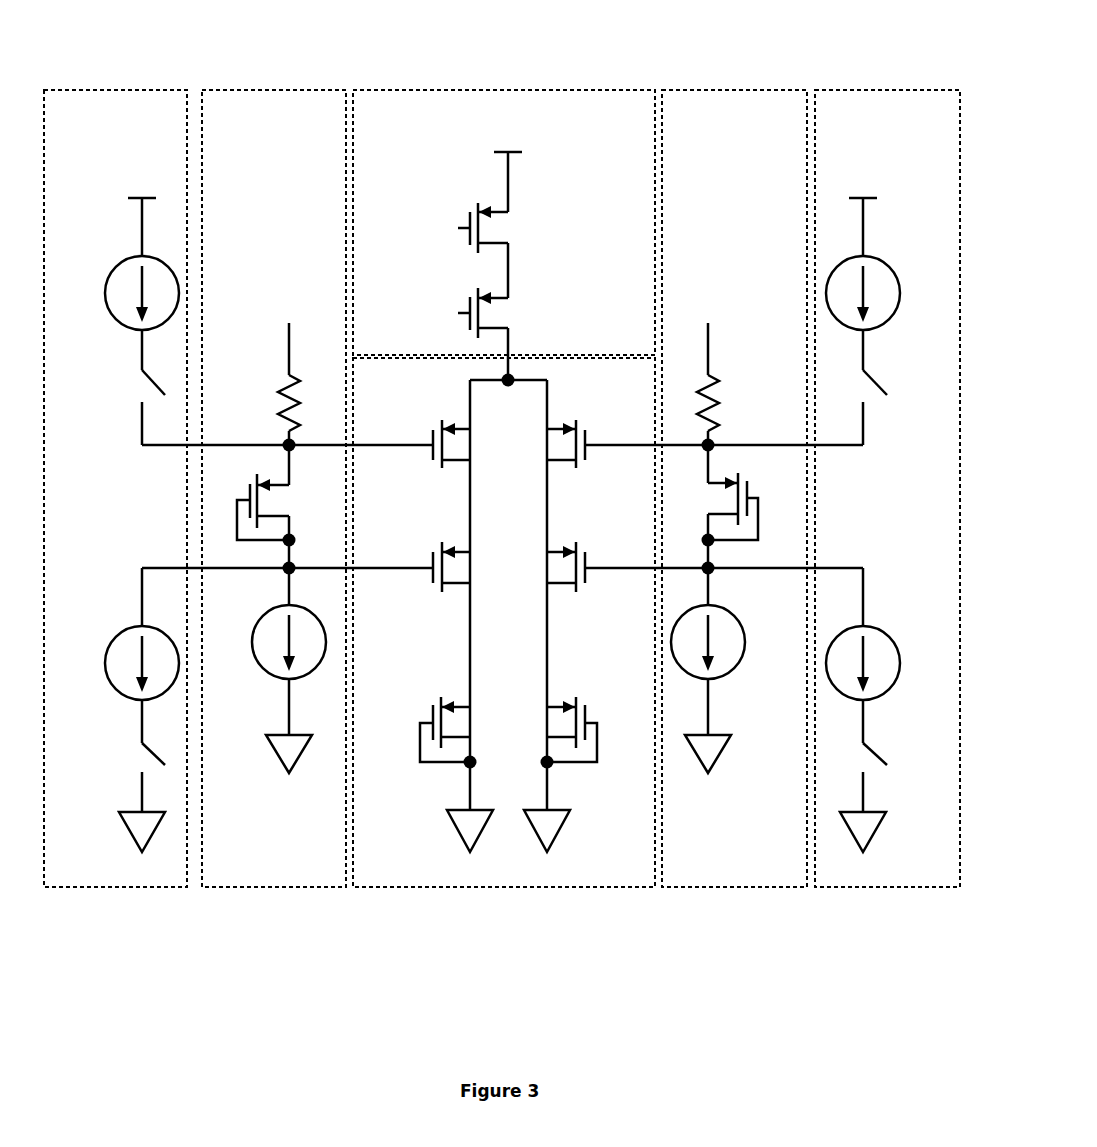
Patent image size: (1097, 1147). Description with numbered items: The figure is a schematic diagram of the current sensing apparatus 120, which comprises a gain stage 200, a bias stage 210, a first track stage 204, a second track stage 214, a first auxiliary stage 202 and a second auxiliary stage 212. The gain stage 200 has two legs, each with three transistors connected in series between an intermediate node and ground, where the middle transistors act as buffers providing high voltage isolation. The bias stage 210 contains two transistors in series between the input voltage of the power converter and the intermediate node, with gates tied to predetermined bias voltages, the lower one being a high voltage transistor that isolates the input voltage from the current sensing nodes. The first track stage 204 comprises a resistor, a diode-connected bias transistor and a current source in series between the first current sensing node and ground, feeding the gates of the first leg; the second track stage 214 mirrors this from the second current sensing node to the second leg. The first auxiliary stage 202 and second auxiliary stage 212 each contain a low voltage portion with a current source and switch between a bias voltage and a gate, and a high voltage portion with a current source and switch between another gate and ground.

The current sensing apparatus 120 is at (840, 62).
The first auxiliary stage 202 is at (102, 133).
The first track stage 204 is at (260, 133).
The bias stage 210 is at (585, 133).
The gain stage 200 is at (602, 392).
The second track stage 214 is at (718, 133).
The second auxiliary stage 212 is at (873, 133).